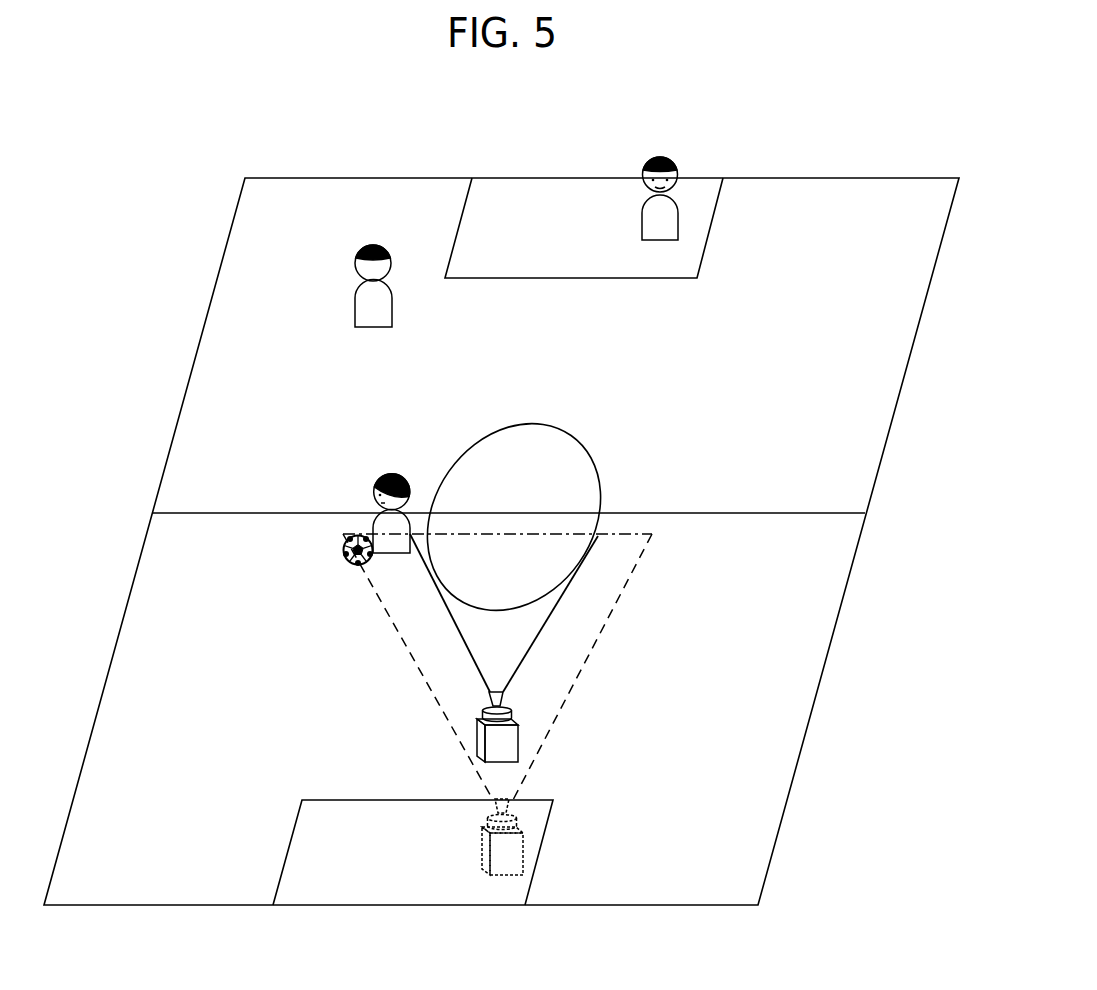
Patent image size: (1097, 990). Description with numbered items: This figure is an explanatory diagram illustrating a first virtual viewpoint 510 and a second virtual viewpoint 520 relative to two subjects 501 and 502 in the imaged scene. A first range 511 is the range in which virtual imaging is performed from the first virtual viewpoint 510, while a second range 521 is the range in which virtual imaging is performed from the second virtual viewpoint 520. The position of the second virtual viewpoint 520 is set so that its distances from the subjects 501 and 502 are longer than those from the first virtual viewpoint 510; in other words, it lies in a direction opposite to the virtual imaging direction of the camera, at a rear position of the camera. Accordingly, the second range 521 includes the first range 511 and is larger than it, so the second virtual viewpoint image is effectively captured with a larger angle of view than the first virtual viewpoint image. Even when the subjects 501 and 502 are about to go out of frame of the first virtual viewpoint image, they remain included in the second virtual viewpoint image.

The subject 501 is at (393, 473).
The subject 502 is at (343, 551).
The first virtual viewpoint 510 is at (488, 707).
The first range 511 is at (447, 612).
The second virtual viewpoint 520 is at (511, 806).
The second range 521 is at (575, 675).